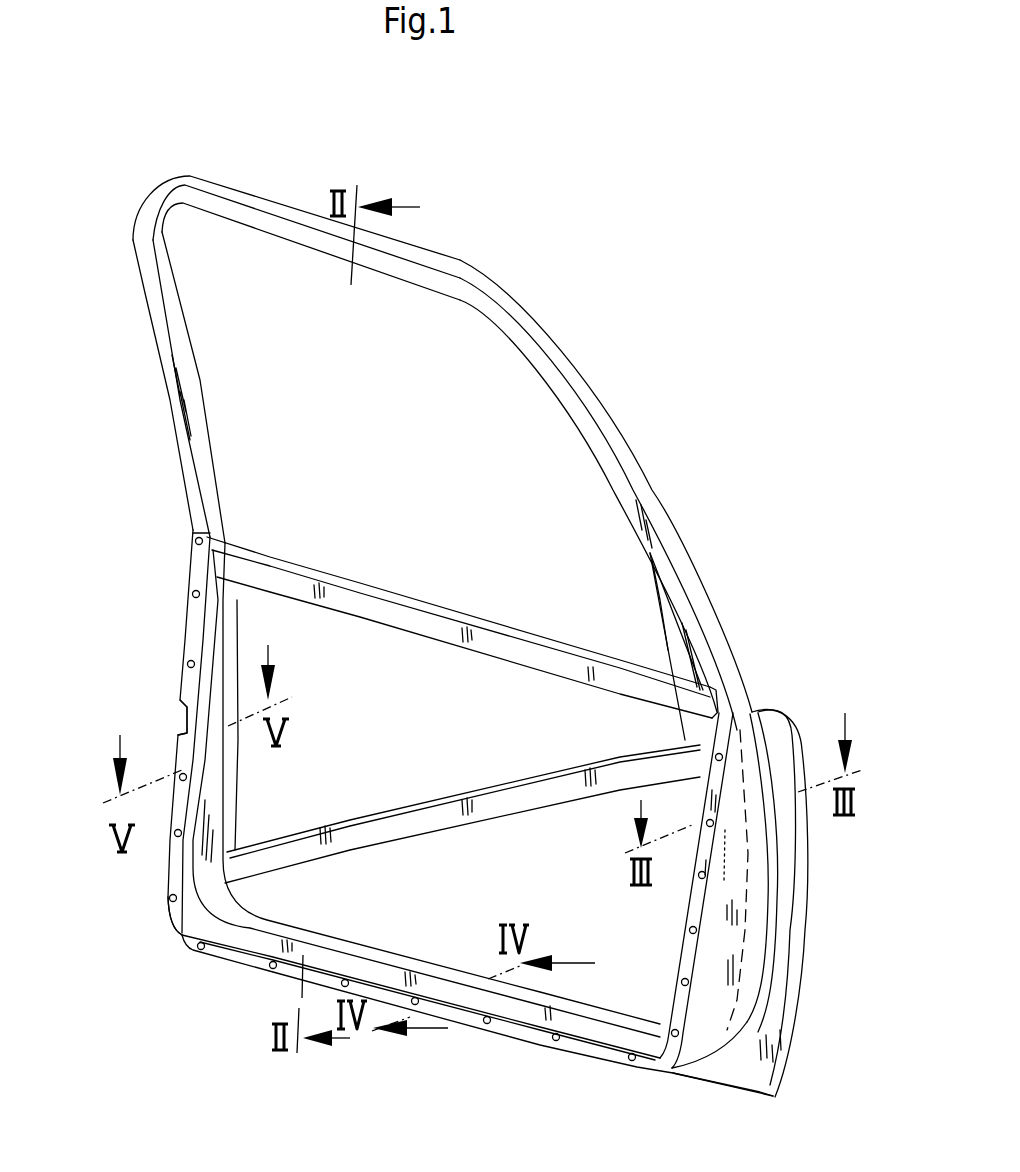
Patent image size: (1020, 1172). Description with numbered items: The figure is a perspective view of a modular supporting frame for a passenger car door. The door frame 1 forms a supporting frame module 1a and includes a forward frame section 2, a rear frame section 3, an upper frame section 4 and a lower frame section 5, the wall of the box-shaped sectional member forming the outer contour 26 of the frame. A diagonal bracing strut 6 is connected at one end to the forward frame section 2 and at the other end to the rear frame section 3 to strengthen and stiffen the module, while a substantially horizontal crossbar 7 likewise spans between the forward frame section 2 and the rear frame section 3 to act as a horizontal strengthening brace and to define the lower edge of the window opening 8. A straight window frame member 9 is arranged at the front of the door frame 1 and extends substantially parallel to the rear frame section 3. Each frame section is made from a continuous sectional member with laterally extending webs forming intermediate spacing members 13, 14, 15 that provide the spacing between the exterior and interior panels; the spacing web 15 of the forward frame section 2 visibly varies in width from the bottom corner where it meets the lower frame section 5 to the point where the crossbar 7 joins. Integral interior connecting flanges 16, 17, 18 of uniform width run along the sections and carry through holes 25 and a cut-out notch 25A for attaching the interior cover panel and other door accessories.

The door frame 1 is at (540, 273).
The supporting frame module 1a is at (462, 262).
The forward frame section 2 is at (750, 710).
The rear frame section 3 is at (190, 552).
The upper frame section 4 is at (262, 190).
The lower frame section 5 is at (380, 953).
The diagonal bracing strut 6 is at (425, 810).
The horizontal crossbar 7 is at (425, 628).
The window opening 8 is at (538, 448).
The straight window frame member 9 is at (668, 627).
The intermediate spacing member 13 is at (195, 783).
The intermediate spacing web 14 is at (527, 1022).
The intermediate spacing web 15 is at (728, 866).
The interior connecting flange 16 is at (185, 622).
The interior connecting flange 17 is at (236, 960).
The interior connecting flange 18 is at (695, 952).
The through holes 25 is at (170, 898).
The cut-out notches 25A is at (178, 720).
The outer contour 26 is at (147, 295).